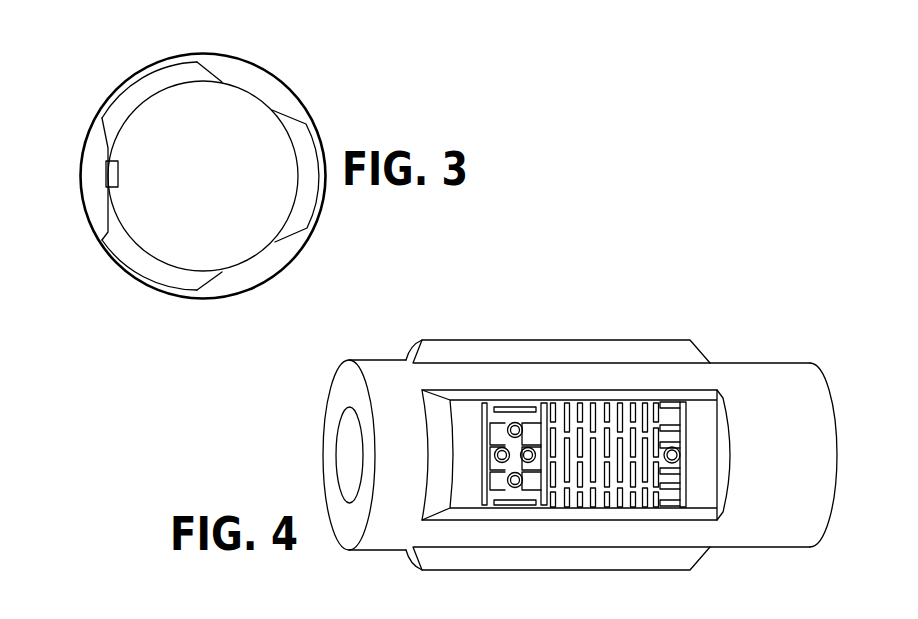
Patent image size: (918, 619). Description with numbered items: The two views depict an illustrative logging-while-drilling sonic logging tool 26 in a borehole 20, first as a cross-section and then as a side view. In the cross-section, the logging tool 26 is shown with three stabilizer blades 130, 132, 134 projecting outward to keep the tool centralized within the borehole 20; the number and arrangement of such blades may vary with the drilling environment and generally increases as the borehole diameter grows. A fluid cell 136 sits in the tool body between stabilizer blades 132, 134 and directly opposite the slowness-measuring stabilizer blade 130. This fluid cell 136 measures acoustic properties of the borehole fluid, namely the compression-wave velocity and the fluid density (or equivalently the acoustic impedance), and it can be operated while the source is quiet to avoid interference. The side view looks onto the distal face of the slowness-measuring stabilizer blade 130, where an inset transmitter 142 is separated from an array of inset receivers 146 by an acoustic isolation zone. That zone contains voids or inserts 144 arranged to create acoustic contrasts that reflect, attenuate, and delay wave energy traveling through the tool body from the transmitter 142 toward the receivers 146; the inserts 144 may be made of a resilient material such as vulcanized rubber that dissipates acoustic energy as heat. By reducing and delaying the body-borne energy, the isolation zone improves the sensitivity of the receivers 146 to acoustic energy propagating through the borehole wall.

In FIG. 3, the borehole 20 is at (227, 293).
In FIG. 3, the sonic logging tool 26 is at (106, 200).
In FIG. 4, the sonic logging tool 26 is at (368, 550).
In FIG. 3, the stabilizer blade 130 is at (306, 123).
In FIG. 4, the stabilizer blade 130 is at (729, 452).
In FIG. 3, the stabilizer blade 132 is at (105, 122).
In FIG. 3, the stabilizer blade 134 is at (173, 284).
In FIG. 3, the fluid cell 136 is at (106, 175).
In FIG. 4, the transmitter 142 is at (670, 446).
In FIG. 4, the inserts 144 is at (590, 412).
In FIG. 4, the inset receivers 146 is at (526, 447).